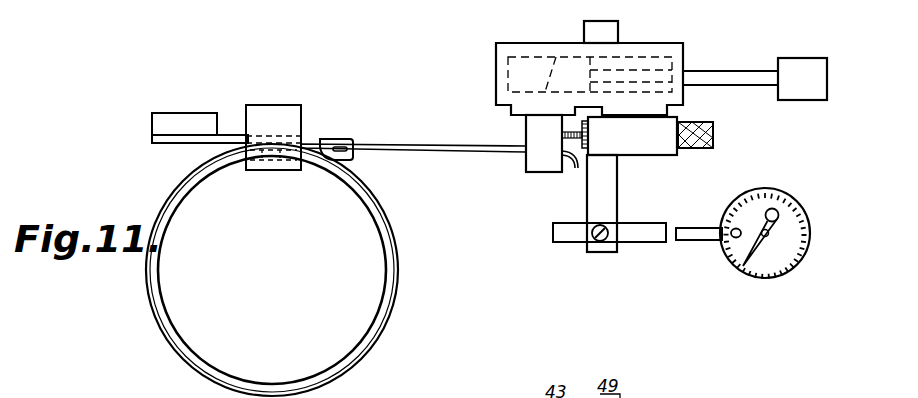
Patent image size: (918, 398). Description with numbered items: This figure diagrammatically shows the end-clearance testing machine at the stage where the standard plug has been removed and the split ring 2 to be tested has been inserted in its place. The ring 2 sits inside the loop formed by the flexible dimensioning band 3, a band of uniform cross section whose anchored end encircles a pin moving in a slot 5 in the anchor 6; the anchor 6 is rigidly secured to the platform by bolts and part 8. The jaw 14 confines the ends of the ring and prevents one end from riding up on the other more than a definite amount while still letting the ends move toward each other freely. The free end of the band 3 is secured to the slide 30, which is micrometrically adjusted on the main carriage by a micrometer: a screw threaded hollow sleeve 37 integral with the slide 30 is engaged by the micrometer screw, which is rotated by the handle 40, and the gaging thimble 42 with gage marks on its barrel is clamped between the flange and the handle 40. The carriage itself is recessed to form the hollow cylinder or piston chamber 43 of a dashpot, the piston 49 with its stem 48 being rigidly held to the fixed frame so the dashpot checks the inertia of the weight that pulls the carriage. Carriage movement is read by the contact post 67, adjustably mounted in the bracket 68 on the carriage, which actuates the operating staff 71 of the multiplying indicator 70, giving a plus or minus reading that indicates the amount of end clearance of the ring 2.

The ring 2 is at (370, 320).
The flexible dimensioning band 3 is at (190, 367).
The slot 5 is at (348, 137).
The anchor 6 is at (318, 138).
The part 8 is at (226, 134).
The jaw 14 is at (286, 114).
The slide 30 is at (528, 166).
The screw threaded member or hollow sleeve 37 is at (566, 130).
The handle 40 is at (713, 140).
The gaging thimble 42 is at (590, 133).
The hollow cylinder or piston chamber 43 is at (530, 57).
The stem 48 is at (717, 72).
The piston 49 is at (595, 62).
The post 67 is at (644, 233).
The bracket 68 is at (603, 253).
The multiplying indicator 70 is at (796, 266).
The operating staff 71 is at (707, 238).